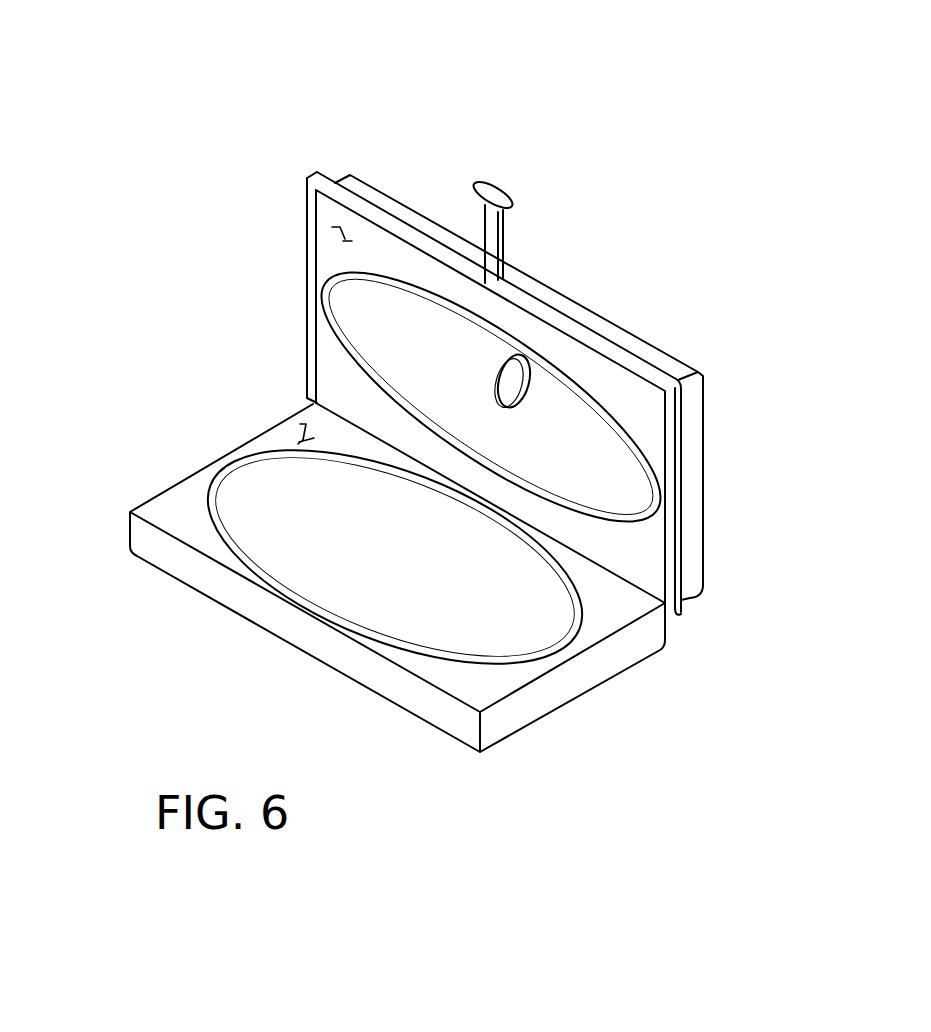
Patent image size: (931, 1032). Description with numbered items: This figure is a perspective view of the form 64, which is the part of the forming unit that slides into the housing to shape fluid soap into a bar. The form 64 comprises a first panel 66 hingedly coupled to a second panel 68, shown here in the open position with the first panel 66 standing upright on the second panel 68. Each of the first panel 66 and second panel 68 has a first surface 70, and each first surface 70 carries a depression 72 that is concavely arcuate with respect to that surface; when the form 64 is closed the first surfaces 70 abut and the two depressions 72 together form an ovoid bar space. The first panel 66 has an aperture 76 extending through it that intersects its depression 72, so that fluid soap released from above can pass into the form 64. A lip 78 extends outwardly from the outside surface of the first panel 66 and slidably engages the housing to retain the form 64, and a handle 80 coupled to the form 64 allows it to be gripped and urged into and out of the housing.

The form 64 is at (435, 446).
The first panel 66 is at (432, 320).
The second panel 68 is at (505, 742).
The first surface 70 is at (340, 228).
The depression 72 is at (263, 502).
The aperture 76 is at (512, 380).
The lip 78 is at (307, 177).
The handle 80 is at (500, 232).